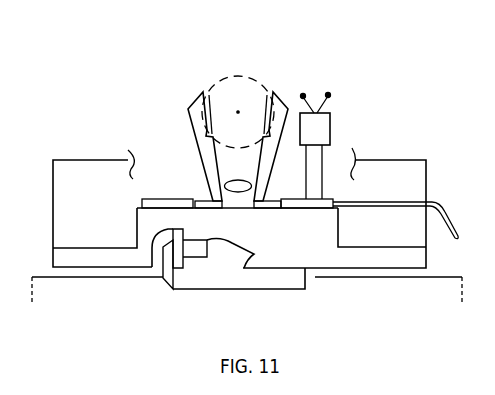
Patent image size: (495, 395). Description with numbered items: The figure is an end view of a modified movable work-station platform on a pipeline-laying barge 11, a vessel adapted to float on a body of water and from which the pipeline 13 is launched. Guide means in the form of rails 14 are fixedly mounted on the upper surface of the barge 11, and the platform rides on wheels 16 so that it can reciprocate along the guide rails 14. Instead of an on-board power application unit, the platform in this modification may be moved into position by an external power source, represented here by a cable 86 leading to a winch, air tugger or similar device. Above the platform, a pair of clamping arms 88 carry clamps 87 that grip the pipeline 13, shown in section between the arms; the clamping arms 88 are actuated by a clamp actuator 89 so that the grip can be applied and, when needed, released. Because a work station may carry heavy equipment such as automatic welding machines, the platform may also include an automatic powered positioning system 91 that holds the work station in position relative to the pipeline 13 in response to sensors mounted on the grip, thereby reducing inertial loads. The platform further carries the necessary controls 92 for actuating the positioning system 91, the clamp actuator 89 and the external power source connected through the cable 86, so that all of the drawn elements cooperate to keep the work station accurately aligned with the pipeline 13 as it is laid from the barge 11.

The pipeline-laying barge 11 is at (406, 304).
The pipeline 13 is at (232, 82).
The rails 14 is at (306, 289).
The wheels 16 is at (164, 277).
The cable 86 is at (455, 230).
The clamps 87 is at (262, 108).
The clamping arms 88 is at (191, 130).
The clamp actuator 89 is at (102, 208).
The positioning system 91 is at (200, 244).
The controls 92 is at (331, 125).